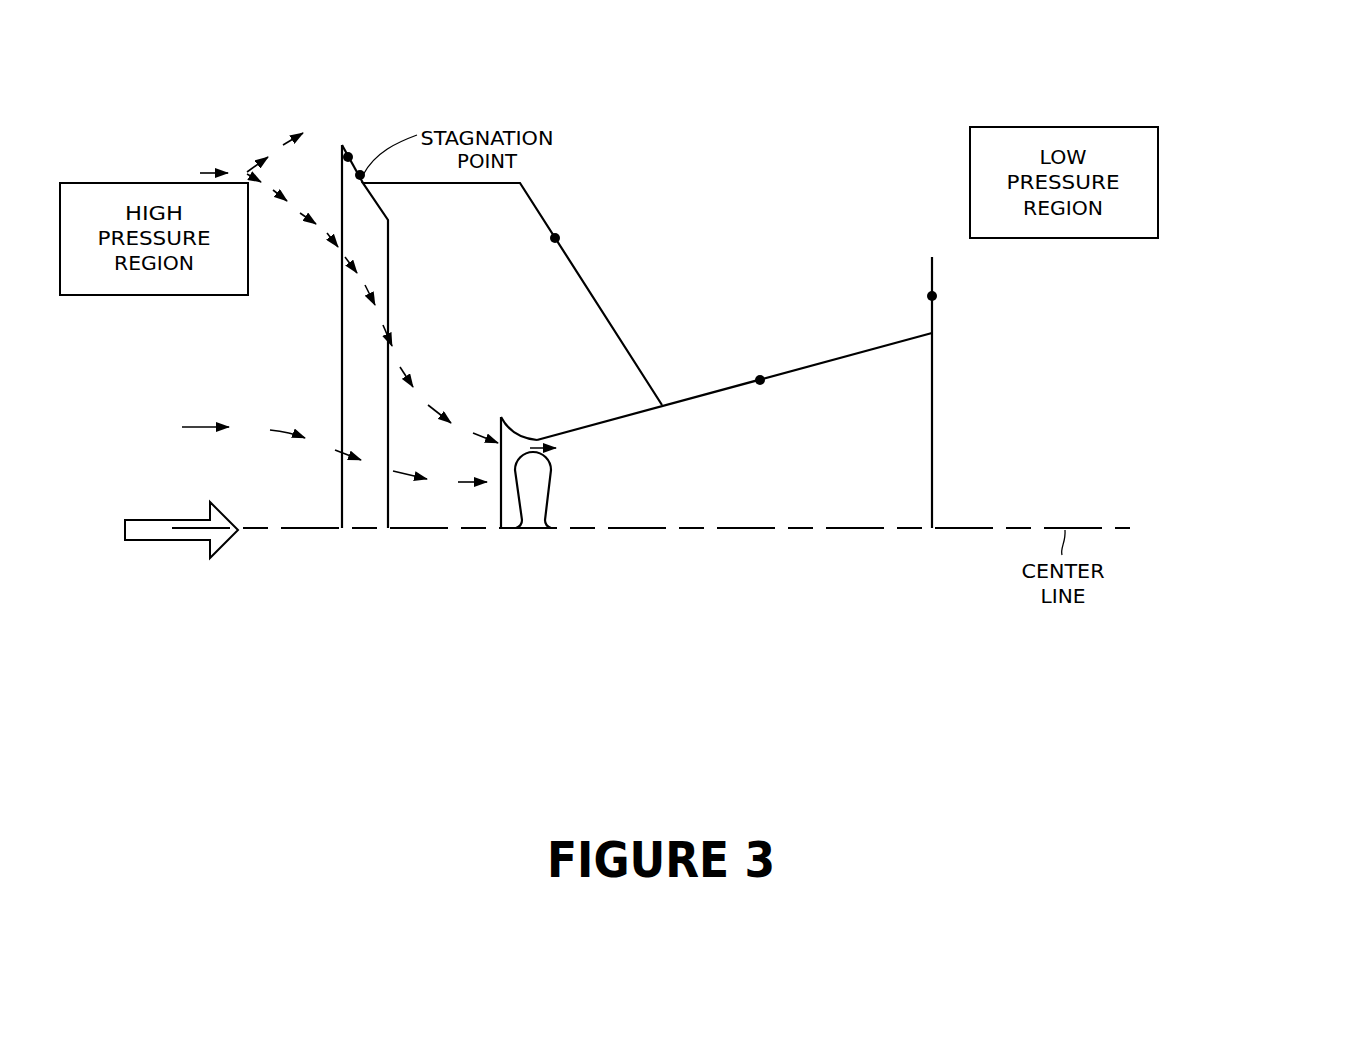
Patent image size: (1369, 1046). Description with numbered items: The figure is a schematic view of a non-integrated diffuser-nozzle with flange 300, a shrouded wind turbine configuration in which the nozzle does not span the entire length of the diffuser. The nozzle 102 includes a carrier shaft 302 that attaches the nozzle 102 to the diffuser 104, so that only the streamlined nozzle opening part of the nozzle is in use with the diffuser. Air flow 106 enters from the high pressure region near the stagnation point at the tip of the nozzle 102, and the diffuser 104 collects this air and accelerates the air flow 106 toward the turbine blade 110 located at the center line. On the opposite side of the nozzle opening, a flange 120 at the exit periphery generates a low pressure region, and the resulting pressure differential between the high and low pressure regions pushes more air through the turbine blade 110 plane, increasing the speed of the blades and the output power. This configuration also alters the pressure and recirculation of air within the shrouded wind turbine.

The nozzle 102 is at (348, 157).
The carrier shaft 302 is at (555, 238).
The flange 120 is at (932, 296).
The diffuser 104 is at (760, 380).
The turbine blade 110 is at (533, 520).
The air flow 106 is at (172, 518).
The non-integrated diffuser-nozzle with flange 300 is at (837, 390).